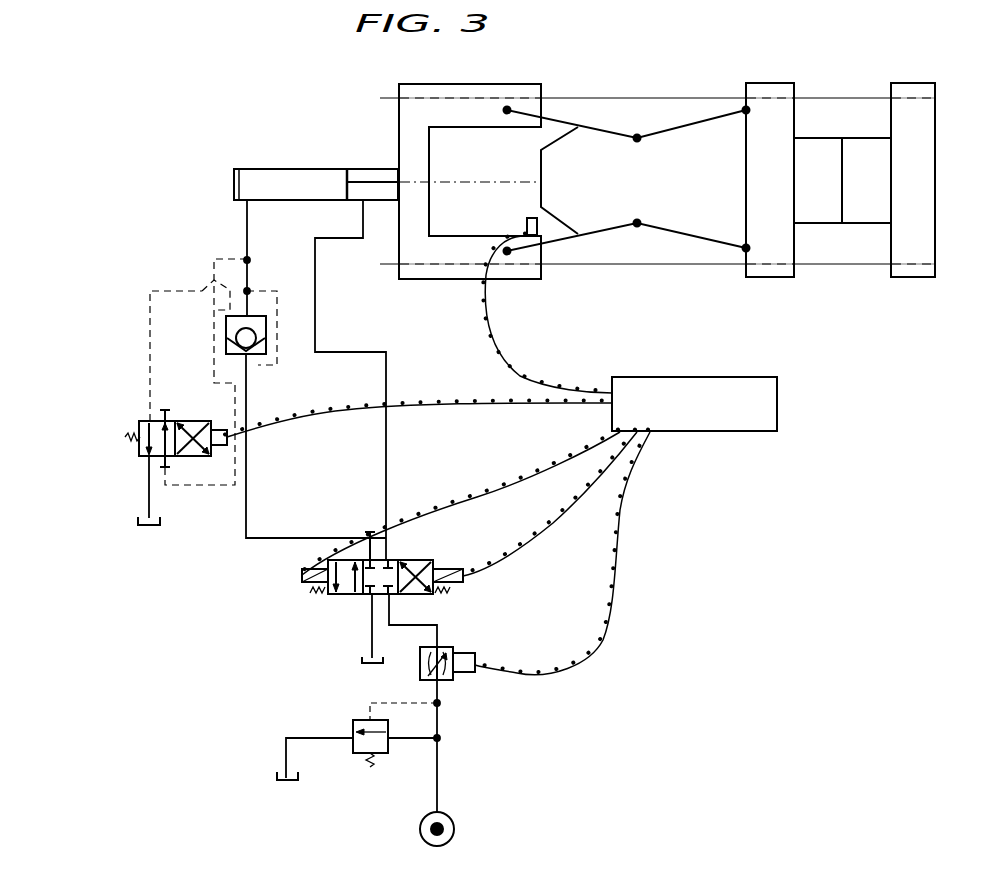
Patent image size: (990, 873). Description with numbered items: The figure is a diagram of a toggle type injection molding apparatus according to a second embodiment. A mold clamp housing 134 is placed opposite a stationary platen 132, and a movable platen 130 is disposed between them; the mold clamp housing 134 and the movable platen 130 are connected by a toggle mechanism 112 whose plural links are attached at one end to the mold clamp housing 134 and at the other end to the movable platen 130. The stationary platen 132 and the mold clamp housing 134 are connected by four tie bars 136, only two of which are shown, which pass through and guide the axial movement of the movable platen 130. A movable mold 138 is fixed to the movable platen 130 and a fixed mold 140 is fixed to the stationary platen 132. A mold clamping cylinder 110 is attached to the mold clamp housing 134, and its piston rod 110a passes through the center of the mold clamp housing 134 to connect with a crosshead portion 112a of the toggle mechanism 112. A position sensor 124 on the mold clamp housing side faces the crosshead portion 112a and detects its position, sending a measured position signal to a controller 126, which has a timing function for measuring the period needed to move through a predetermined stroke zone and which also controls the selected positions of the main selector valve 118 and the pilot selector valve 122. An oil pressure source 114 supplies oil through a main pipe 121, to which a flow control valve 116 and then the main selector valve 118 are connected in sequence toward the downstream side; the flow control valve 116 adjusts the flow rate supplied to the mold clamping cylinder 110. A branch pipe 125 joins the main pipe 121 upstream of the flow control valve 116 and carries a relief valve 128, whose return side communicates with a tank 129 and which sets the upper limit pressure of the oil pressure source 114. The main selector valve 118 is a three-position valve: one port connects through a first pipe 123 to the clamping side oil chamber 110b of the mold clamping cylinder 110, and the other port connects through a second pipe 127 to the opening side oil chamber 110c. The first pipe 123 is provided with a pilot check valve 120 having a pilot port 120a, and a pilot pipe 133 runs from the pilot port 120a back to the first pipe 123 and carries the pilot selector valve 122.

The mold clamping cylinder 110 is at (300, 169).
The piston rod 110a is at (352, 193).
The clamping side oil chamber 110b is at (234, 185).
The opening side oil chamber 110c is at (370, 172).
The toggle mechanism 112 is at (596, 138).
The crosshead portion 112a is at (541, 197).
The oil pressure source 114 is at (455, 826).
The flow control valve 116 is at (453, 680).
The main selector valve 118 is at (433, 594).
The pilot check valve 120 is at (250, 356).
The pilot port 120a is at (212, 308).
The main pipe 121 is at (437, 634).
The pilot selector valve 122 is at (139, 428).
The first pipe 123 is at (248, 217).
The position sensor 124 is at (540, 240).
The branch pipe 125 is at (410, 740).
The controller 126 is at (733, 376).
The second pipe 127 is at (387, 467).
The relief valve 128 is at (350, 748).
The tank 129 is at (138, 520).
The movable platen 130 is at (770, 83).
The stationary platen 132 is at (910, 83).
The pilot pipe 133 is at (150, 322).
The mold clamp housing 134 is at (503, 82).
The tie bars 136 is at (635, 97).
The movable mold 138 is at (815, 223).
The fixed mold 140 is at (868, 223).